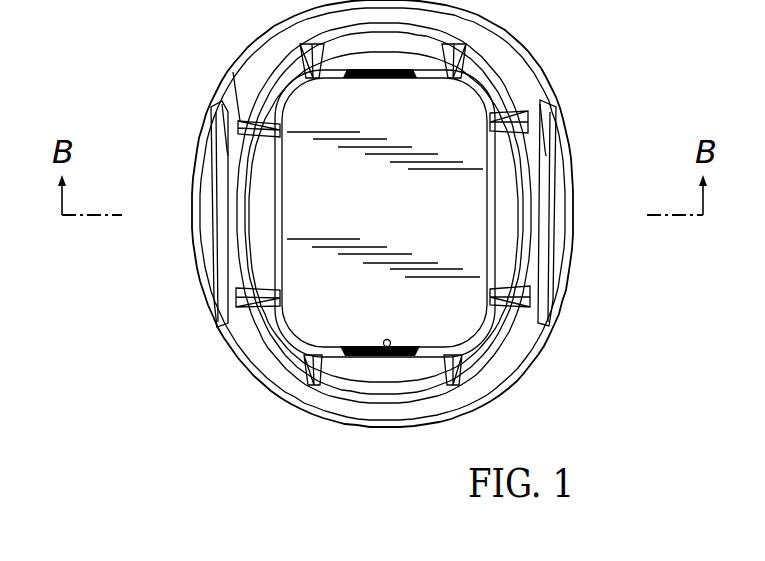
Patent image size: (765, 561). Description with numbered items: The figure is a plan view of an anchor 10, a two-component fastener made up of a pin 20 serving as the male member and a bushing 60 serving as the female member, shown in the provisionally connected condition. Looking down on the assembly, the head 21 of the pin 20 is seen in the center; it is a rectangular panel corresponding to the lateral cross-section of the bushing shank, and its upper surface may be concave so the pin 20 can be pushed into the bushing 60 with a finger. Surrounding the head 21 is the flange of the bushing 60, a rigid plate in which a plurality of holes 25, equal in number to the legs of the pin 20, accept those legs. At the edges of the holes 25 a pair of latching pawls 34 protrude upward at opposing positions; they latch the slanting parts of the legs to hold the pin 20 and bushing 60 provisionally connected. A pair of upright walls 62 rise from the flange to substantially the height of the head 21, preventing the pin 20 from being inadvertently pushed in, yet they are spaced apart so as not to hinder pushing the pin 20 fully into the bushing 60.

The anchor 10 is at (591, 87).
The pin 20 is at (456, 119).
The head 21 is at (460, 245).
The holes 25 is at (388, 347).
The latching pawls 34 is at (302, 361).
The bushing 60 is at (232, 77).
The upright walls 62 is at (557, 162).